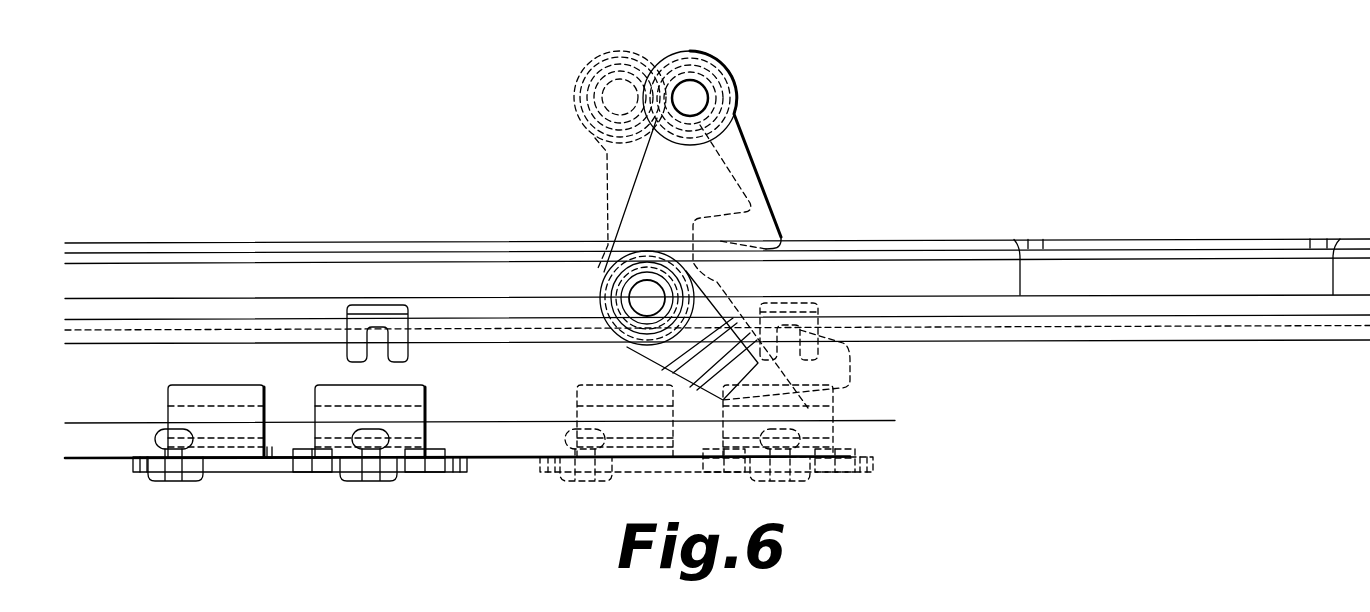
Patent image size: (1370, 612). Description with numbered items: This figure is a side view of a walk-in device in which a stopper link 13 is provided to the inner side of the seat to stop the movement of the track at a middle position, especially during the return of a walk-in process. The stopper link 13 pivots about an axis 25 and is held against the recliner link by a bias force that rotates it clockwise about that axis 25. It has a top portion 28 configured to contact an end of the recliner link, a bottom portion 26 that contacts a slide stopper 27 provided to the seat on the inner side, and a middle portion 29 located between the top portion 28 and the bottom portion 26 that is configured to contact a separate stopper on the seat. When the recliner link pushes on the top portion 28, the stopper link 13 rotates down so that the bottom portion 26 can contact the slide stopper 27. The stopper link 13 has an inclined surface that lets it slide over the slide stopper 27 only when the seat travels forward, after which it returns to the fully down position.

The stopper link 13 is at (680, 181).
The axis 25 is at (636, 292).
The bottom portion 26 is at (833, 428).
The slide stopper 27 is at (845, 466).
The top portion 28 is at (757, 163).
The middle portion 29 is at (720, 242).